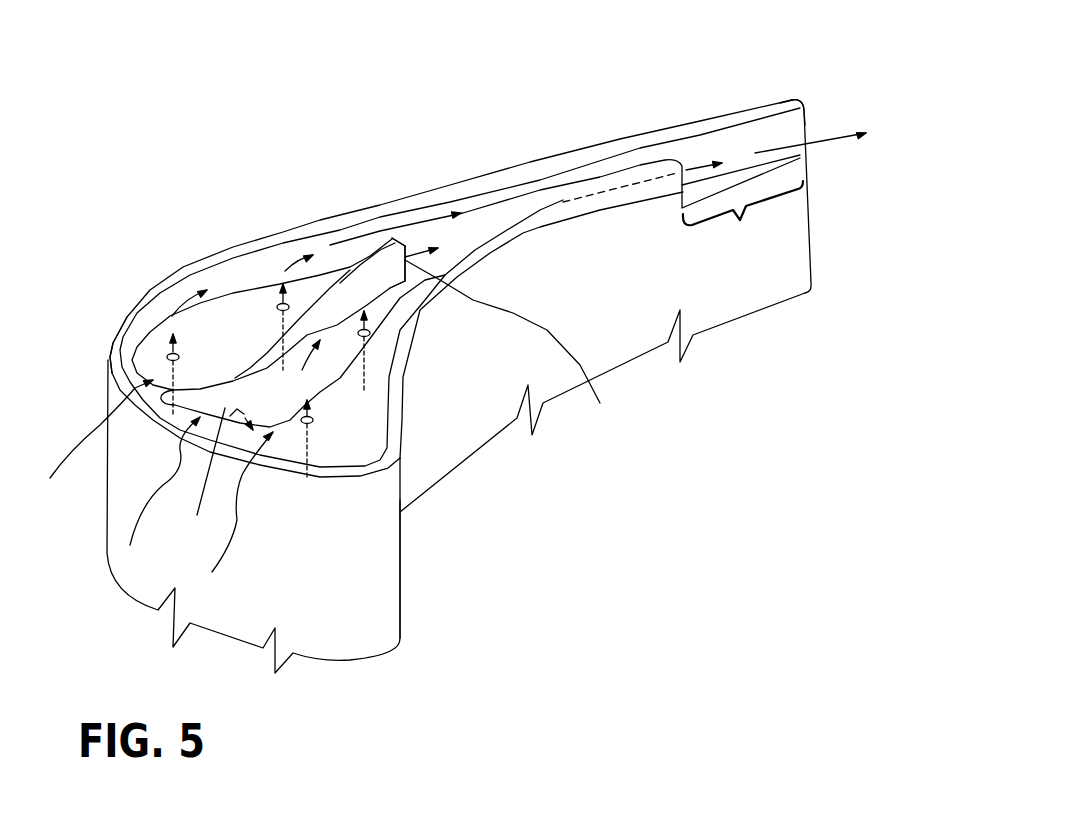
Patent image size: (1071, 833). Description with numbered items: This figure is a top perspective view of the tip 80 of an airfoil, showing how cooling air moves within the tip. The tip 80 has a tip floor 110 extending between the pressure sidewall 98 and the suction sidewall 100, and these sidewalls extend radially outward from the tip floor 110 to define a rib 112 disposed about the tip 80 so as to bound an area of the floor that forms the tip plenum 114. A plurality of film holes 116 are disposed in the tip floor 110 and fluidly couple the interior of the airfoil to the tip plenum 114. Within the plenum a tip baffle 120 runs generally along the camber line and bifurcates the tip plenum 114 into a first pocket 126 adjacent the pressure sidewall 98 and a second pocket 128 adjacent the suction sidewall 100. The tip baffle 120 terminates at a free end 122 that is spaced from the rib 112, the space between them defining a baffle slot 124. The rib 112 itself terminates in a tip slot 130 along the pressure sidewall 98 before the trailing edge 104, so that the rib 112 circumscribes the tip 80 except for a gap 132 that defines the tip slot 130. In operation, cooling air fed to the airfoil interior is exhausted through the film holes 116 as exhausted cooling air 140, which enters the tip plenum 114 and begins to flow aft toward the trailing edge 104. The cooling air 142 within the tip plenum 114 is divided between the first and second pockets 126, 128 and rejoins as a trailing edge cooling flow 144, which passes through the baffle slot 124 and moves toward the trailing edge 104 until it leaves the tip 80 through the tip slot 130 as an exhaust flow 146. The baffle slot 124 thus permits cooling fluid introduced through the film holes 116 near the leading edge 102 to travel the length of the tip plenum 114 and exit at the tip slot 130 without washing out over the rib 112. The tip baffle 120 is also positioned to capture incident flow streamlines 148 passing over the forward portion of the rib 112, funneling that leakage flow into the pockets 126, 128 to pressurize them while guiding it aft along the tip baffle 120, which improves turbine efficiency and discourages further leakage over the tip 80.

The tip 80 is at (150, 264).
The pressure sidewall 98 is at (571, 312).
The suction sidewall 100 is at (128, 475).
The leading edge 102 is at (400, 563).
The trailing edge 104 is at (810, 207).
The tip floor 110 is at (222, 346).
The rib 112 is at (275, 237).
The tip plenum 114 is at (499, 202).
The film holes 116 is at (167, 357).
The tip baffle 120 is at (373, 245).
The free end 122 is at (410, 247).
The baffle slot 124 is at (391, 222).
The first pocket 126 is at (200, 475).
The second pocket 128 is at (228, 296).
The tip slot 130 is at (789, 125).
The gap 132 is at (743, 215).
The exhausted cooling air 140 is at (170, 343).
The cooling air 142 is at (366, 240).
The trailing edge cooling flow 144 is at (521, 208).
The exhaust flow 146 is at (840, 130).
The incident flow streamlines 148 is at (144, 486).